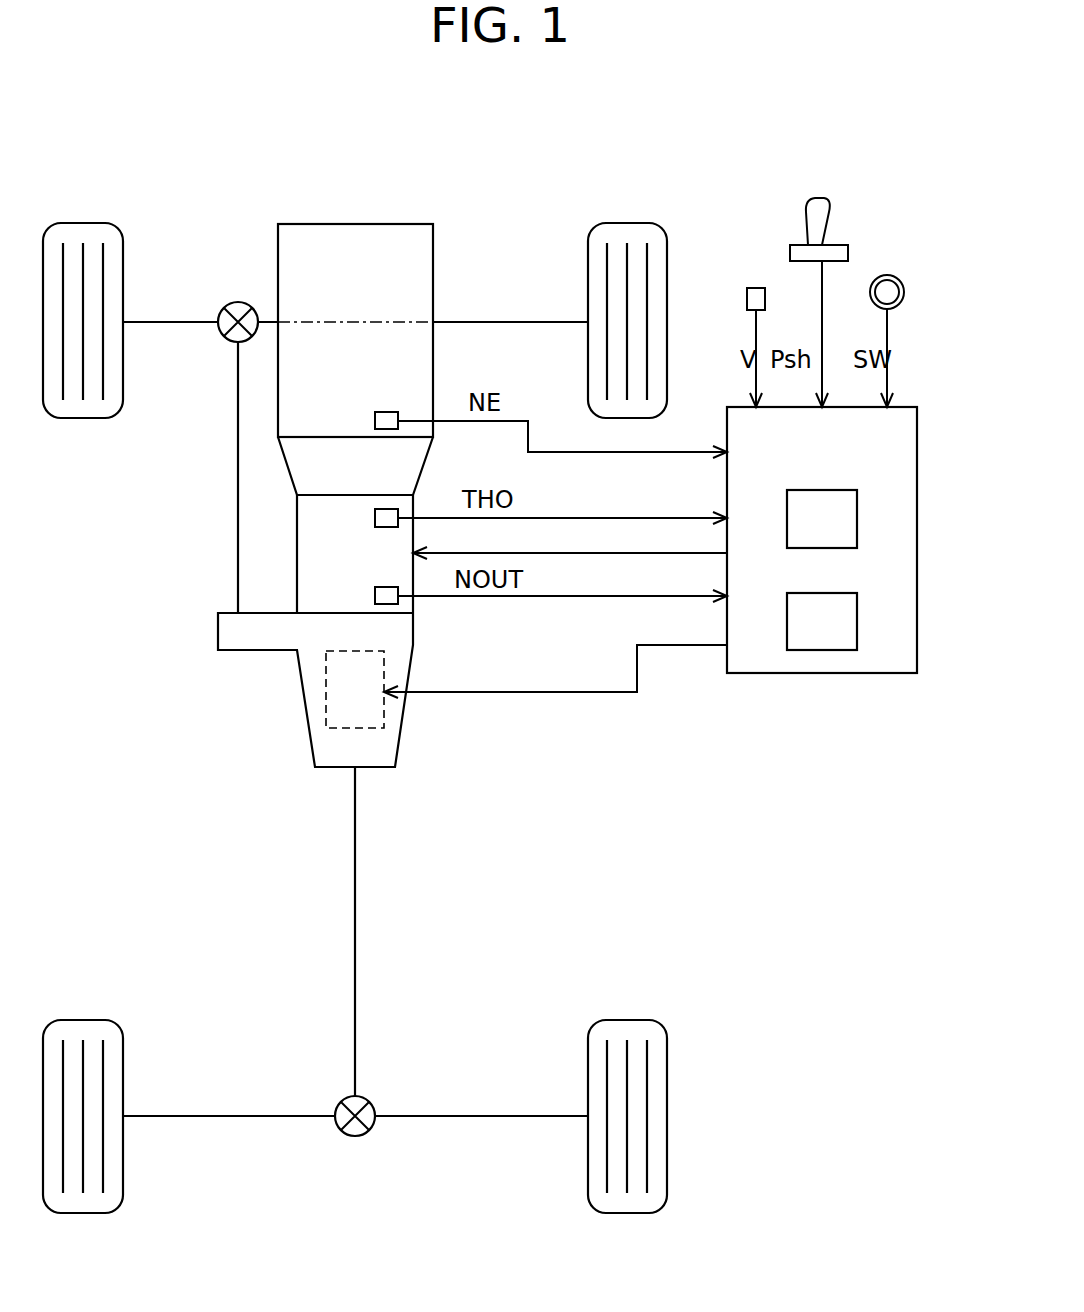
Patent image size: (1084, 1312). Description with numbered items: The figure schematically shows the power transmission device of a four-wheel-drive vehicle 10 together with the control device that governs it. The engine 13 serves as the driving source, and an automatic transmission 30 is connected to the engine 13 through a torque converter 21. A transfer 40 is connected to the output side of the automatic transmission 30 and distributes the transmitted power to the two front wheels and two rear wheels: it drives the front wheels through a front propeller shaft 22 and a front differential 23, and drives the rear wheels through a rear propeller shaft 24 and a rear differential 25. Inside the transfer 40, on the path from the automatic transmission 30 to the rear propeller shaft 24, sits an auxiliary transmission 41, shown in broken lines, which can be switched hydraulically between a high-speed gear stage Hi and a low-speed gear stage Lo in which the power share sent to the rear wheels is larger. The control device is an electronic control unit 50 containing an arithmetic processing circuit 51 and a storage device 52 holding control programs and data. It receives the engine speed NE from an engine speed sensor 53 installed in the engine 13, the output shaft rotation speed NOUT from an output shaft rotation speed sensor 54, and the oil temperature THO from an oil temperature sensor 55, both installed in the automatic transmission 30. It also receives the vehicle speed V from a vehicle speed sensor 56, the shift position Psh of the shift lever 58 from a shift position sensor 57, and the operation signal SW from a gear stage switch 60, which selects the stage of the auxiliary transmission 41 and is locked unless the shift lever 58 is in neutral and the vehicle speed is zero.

The vehicle 10 is at (179, 142).
The engine 13 is at (436, 252).
The torque converter 21 is at (424, 463).
The front propeller shaft 22 is at (237, 480).
The front differential 23 is at (240, 300).
The rear propeller shaft 24 is at (357, 930).
The rear differential 25 is at (357, 1138).
The automatic transmission 30 is at (296, 551).
The transfer 40 is at (410, 633).
The auxiliary transmission 41 is at (325, 707).
The electronic control unit 50 is at (888, 675).
The arithmetic processing circuit 51 is at (857, 518).
The storage device 52 is at (857, 622).
The engine speed sensor 53 is at (374, 421).
The output shaft rotation speed sensor 54 is at (374, 596).
The oil temperature sensor 55 is at (374, 518).
The vehicle speed sensor 56 is at (745, 298).
The shift position sensor 57 is at (850, 257).
The shift lever 58 is at (803, 215).
The gear stage switch 60 is at (905, 293).